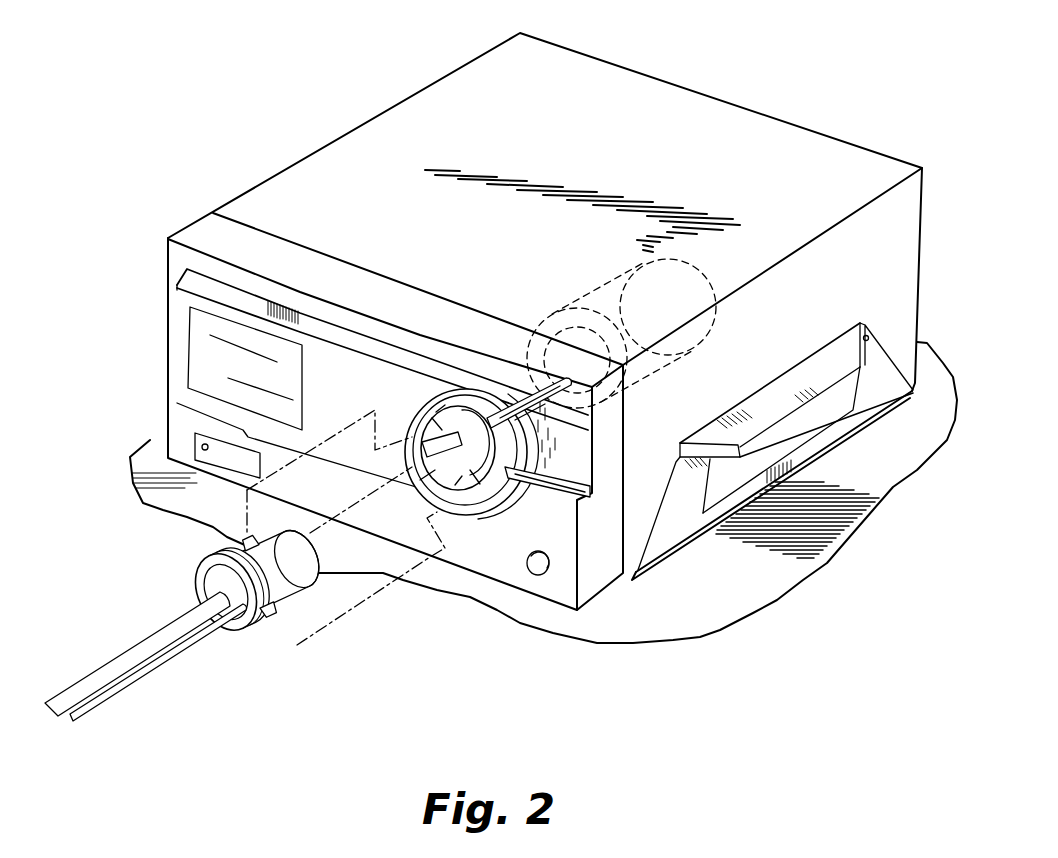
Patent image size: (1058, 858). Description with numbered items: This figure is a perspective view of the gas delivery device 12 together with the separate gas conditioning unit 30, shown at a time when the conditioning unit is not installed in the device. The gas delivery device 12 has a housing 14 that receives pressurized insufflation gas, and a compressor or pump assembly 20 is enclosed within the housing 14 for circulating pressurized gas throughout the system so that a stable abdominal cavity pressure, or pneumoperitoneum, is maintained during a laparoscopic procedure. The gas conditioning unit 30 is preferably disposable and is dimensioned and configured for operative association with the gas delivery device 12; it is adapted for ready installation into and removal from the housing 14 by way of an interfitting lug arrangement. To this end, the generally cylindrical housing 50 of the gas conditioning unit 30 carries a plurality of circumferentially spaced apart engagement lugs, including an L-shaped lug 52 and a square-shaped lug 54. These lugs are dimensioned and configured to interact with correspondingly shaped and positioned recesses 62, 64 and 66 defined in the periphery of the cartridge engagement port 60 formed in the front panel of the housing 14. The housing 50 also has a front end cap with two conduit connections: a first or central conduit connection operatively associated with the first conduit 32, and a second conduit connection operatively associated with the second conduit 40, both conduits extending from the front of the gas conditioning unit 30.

The gas delivery device 12 is at (372, 105).
The housing 14 is at (634, 73).
The compressor or pump assembly 20 is at (677, 344).
The gas conditioning unit 30 is at (279, 518).
The first conduit 32 is at (163, 633).
The second conduit 40 is at (147, 673).
The housing 50 is at (283, 567).
The L-shaped lug 52 is at (228, 535).
The square-shaped lug 54 is at (270, 633).
The cartridge engagement port 60 is at (428, 393).
The recess 62 is at (457, 398).
The recess 64 is at (490, 505).
The recess 66 is at (413, 402).